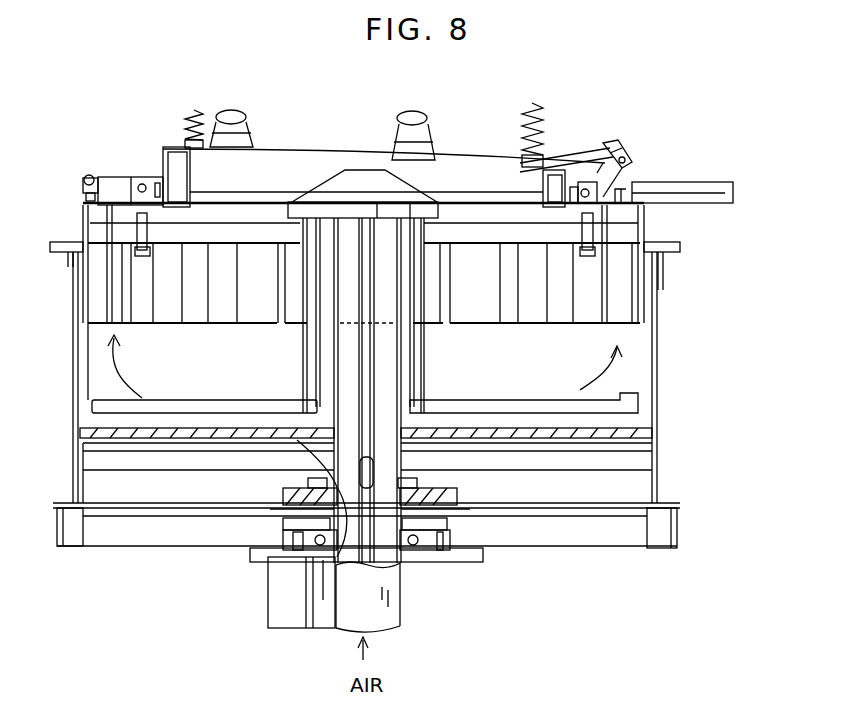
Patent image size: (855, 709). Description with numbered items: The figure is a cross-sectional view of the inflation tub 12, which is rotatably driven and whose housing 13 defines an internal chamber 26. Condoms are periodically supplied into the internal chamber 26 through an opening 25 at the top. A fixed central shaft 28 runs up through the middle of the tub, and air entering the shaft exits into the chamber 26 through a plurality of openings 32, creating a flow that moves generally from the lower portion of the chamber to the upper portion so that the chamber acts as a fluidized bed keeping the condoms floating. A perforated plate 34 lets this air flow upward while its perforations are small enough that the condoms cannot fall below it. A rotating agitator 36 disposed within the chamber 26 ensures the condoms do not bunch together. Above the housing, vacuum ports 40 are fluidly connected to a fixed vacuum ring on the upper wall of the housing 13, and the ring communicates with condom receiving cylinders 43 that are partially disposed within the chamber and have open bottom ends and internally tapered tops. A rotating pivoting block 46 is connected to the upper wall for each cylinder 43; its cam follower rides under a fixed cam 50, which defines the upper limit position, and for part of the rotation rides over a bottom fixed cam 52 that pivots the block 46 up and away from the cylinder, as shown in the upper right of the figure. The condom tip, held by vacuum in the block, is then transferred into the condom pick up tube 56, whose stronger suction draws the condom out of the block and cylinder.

The inflation tub 12 is at (660, 323).
The housing 13 is at (78, 418).
The opening 25 is at (197, 210).
The internal chamber 26 is at (80, 372).
The central shaft 28 is at (402, 600).
The openings 32 is at (386, 495).
The plate 34 is at (653, 430).
The rotating agitator 36 is at (620, 390).
The vacuum ports 40 is at (231, 112).
The condom receiving cylinders 43 is at (668, 287).
The rotating pivoting block 46 is at (598, 162).
The fixed cam 50 is at (89, 180).
The bottom fixed cam 52 is at (640, 147).
The condom pick up tube 56 is at (712, 188).